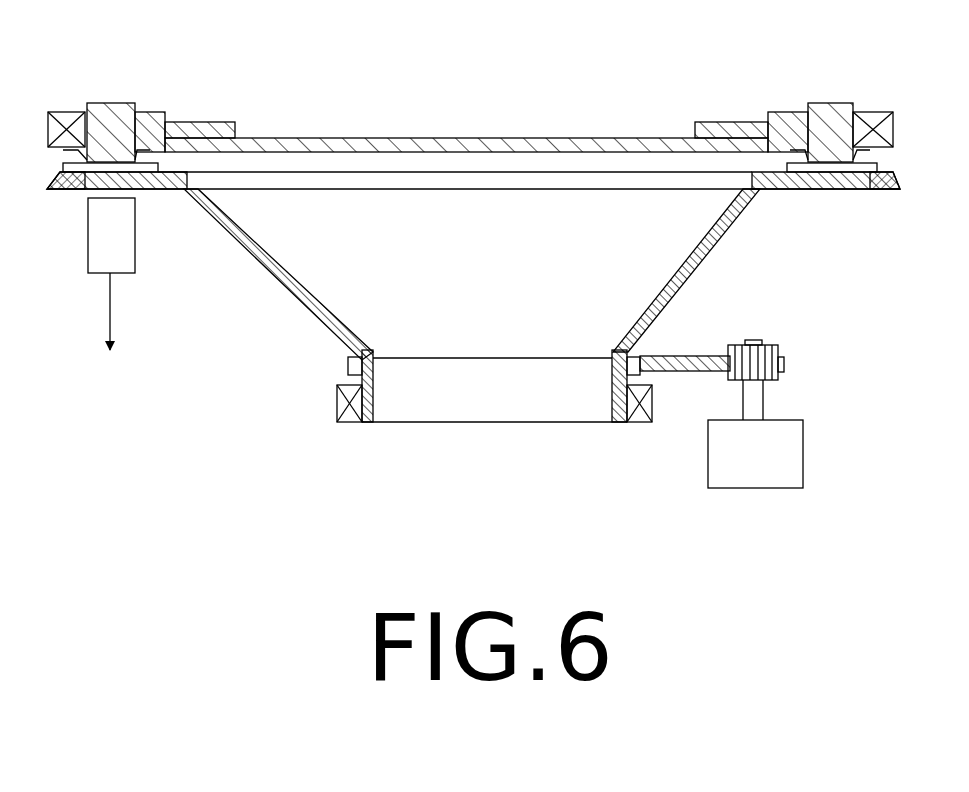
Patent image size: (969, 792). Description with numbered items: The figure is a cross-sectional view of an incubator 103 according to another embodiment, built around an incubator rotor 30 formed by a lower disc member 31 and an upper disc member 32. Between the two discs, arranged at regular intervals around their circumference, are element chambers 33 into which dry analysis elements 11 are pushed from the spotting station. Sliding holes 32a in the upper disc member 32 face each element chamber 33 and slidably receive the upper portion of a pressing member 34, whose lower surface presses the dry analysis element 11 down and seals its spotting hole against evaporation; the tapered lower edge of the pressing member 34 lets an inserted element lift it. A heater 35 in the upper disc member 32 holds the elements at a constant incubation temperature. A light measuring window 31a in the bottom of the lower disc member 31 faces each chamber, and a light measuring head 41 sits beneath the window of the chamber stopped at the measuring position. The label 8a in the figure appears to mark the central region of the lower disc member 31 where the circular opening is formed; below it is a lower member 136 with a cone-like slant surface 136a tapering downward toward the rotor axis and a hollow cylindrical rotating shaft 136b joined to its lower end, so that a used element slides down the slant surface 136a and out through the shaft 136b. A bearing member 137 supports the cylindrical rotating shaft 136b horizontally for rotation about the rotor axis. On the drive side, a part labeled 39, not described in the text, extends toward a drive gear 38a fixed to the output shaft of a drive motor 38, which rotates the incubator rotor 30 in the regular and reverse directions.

The incubator 103 is at (360, 55).
The substrate 8a is at (605, 185).
The incubator rotor 30 is at (505, 135).
The lower disc member 31 is at (883, 190).
The light measuring window 31a is at (82, 190).
The upper disc member 32 is at (410, 138).
The sliding hole 32a is at (135, 110).
The element chamber 33 is at (64, 118).
The pressing member 34 is at (116, 110).
The heater 35 is at (215, 122).
The dry analysis element 11 is at (128, 188).
The light measuring head 41 is at (92, 263).
The lower member 136 is at (300, 307).
The cone-like slant surface 136a is at (272, 255).
The cylindrical rotating shaft 136b is at (375, 387).
The bearing member 137 is at (337, 402).
The drive shaft 39 is at (673, 356).
The drive gear 38a is at (780, 355).
The drive motor 38 is at (803, 460).